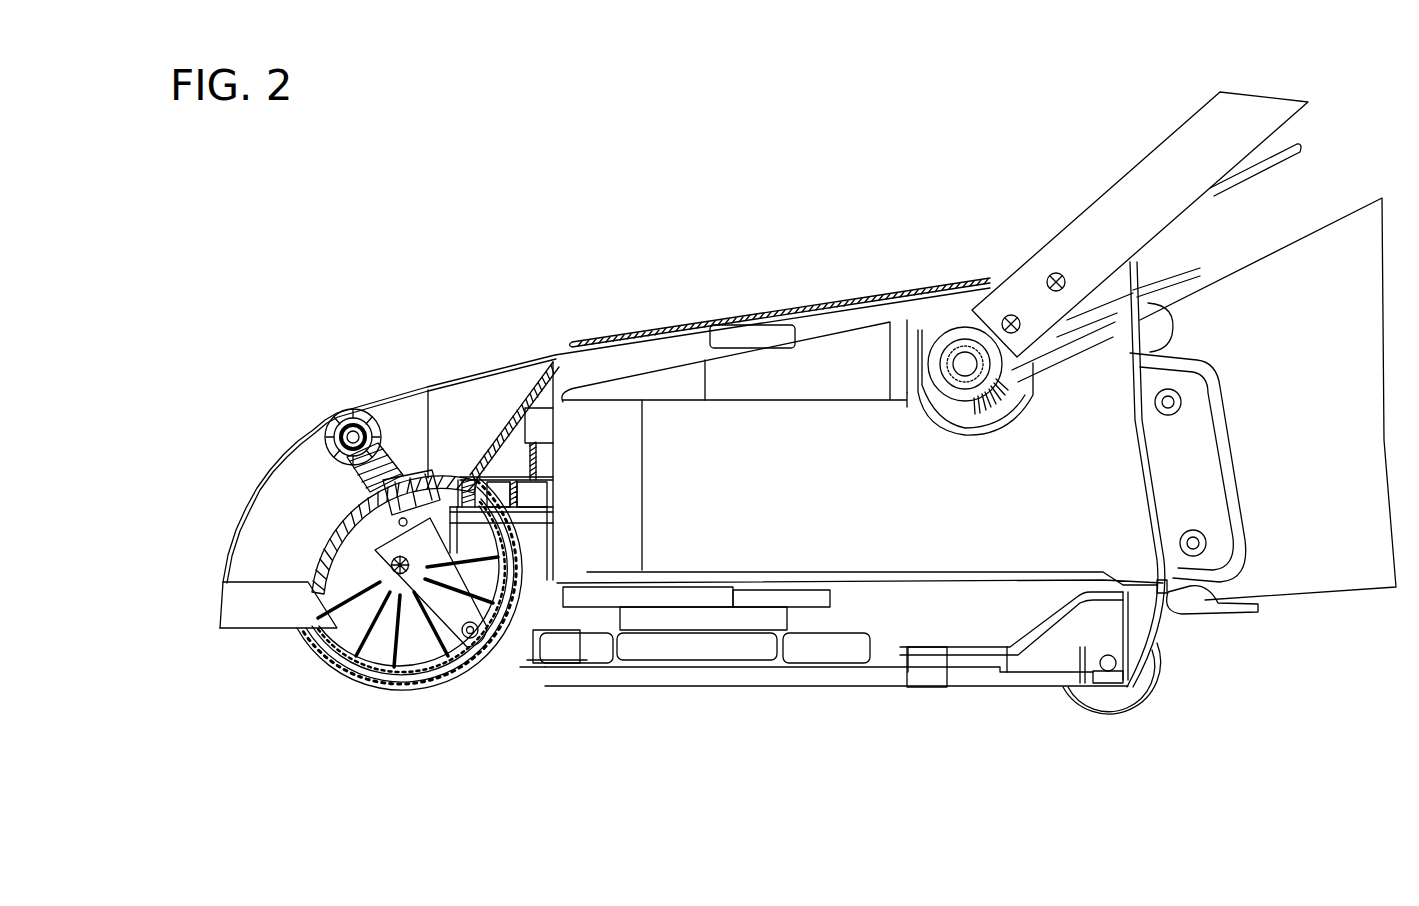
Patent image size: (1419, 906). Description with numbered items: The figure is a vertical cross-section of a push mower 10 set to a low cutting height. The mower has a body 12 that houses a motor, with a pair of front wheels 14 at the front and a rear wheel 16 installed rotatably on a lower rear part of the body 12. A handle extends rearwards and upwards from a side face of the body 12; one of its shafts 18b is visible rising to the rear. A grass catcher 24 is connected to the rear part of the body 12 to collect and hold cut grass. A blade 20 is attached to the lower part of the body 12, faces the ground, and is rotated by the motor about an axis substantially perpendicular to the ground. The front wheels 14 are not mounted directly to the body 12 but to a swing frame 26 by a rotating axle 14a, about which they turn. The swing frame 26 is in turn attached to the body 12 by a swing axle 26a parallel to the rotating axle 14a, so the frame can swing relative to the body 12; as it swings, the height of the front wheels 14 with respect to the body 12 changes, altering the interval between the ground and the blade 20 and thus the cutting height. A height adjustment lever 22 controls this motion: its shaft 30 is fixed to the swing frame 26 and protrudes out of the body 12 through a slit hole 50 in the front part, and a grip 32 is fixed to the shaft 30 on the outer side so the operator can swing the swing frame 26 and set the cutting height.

The push mower 10 is at (337, 198).
The body 12 is at (563, 372).
The front wheels 14 is at (360, 660).
The rotating axle 14a is at (386, 655).
The rear wheel 16 is at (1146, 687).
The shaft 18b is at (1127, 188).
The blade 20 is at (487, 670).
The height adjustment lever 22 is at (363, 396).
The grass catcher 24 is at (1318, 577).
The swing frame 26 is at (420, 653).
The swing axle 26a is at (477, 657).
The shaft 30 is at (347, 480).
The grip 32 is at (327, 420).
The slit hole 50 is at (340, 513).